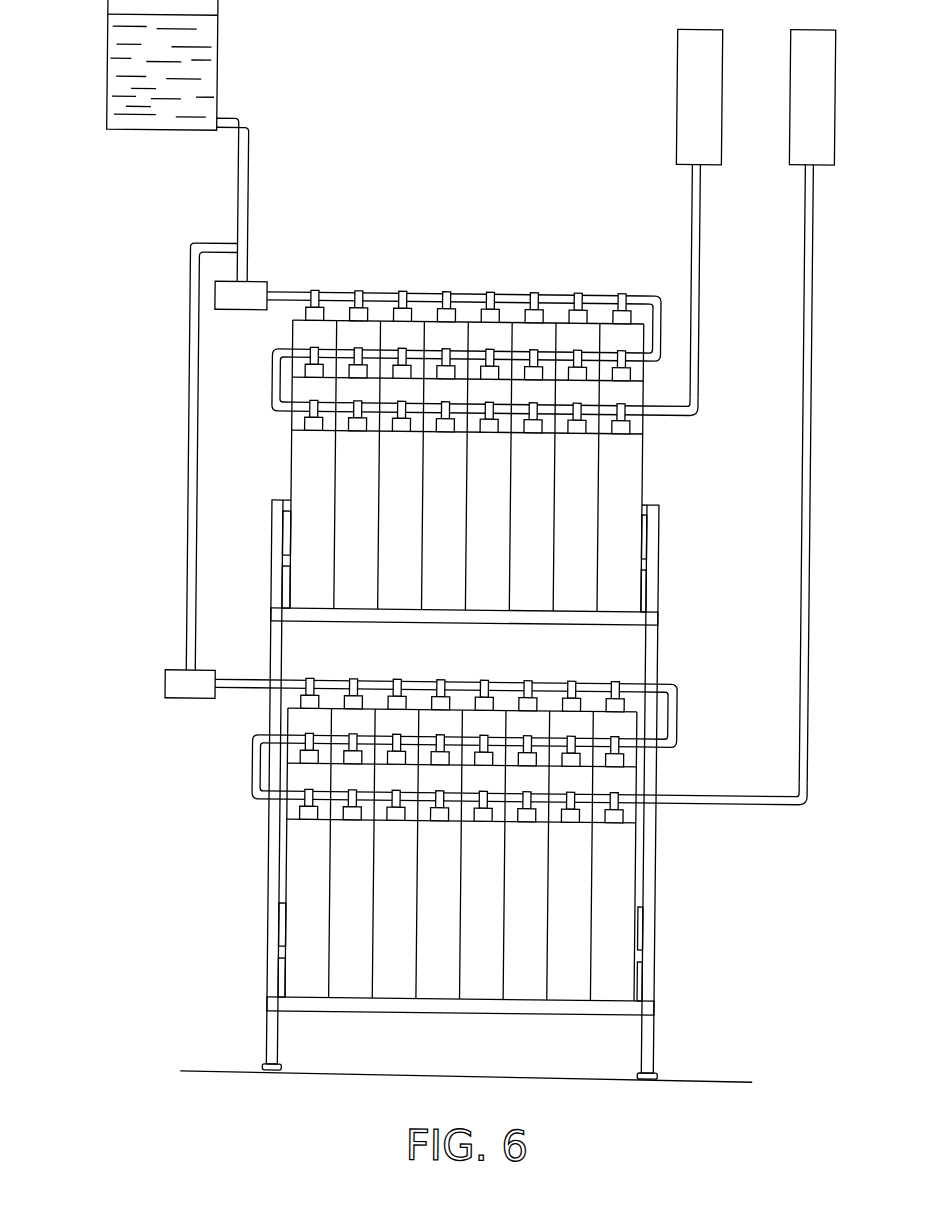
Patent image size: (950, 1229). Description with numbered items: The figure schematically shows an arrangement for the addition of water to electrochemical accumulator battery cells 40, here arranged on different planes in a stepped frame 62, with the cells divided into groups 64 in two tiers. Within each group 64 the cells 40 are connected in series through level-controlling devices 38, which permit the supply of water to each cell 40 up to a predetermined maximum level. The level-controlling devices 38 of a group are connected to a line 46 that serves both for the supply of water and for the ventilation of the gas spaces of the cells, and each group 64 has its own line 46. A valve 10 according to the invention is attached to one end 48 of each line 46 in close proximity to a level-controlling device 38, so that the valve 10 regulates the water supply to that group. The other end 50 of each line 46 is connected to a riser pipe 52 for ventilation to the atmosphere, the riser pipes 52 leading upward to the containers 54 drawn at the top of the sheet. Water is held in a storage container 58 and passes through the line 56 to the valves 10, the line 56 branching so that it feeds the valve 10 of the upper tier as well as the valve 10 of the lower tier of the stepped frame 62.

The valve 10 is at (248, 285).
The level-controlling device 38 is at (355, 292).
The cell 40 is at (301, 333).
The line 46 is at (269, 378).
The one end of the line 48 is at (284, 298).
The other end of the line 50 is at (669, 414).
The riser pipe 52 is at (800, 318).
The collection tank 54 is at (784, 90).
The line 56 is at (233, 187).
The storage container 58 is at (211, 52).
The stepped frame 62 is at (270, 1030).
The group 64 is at (120, 305).